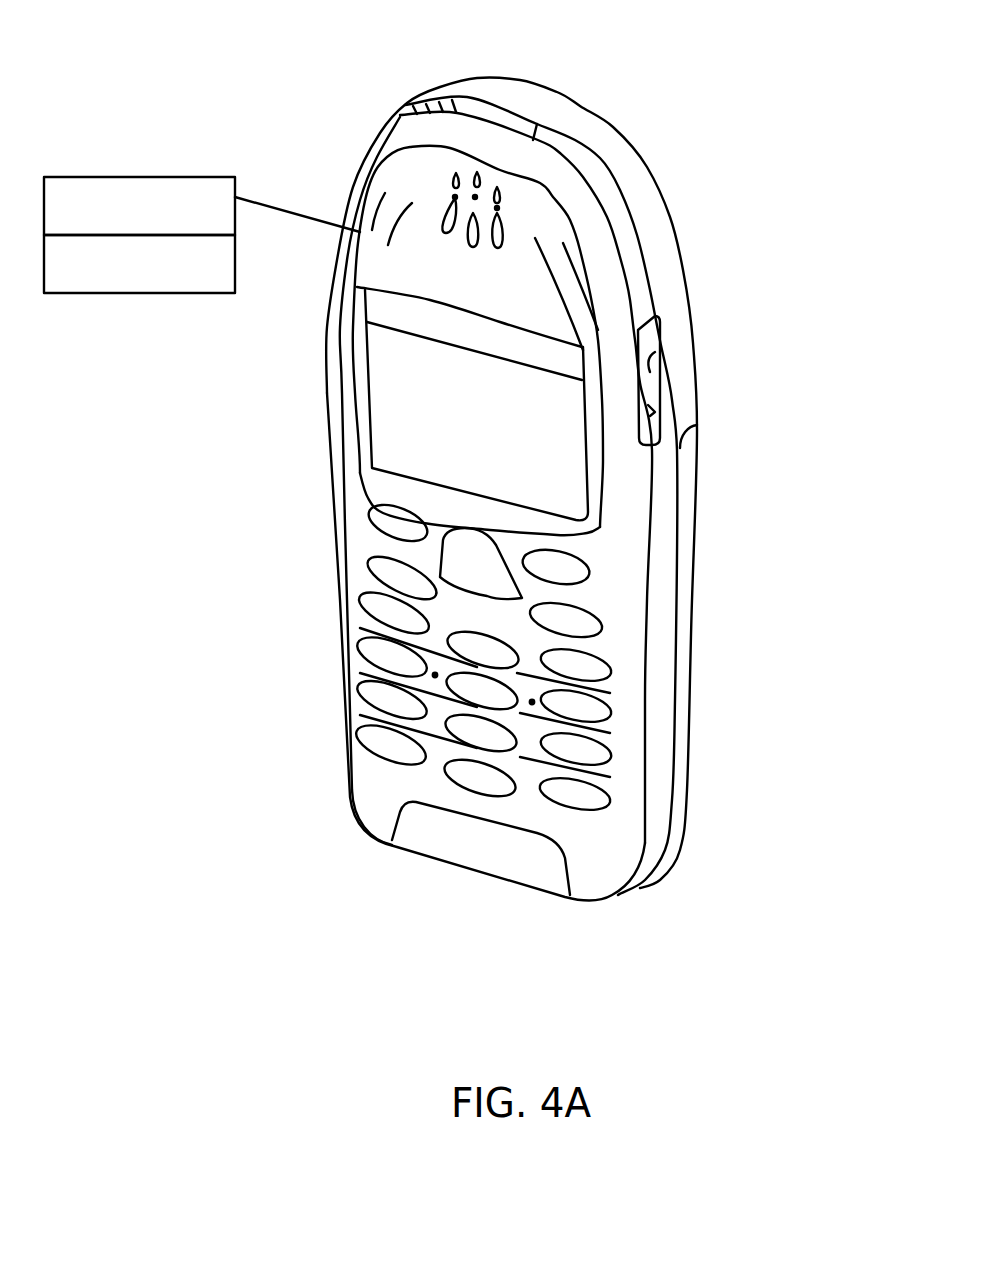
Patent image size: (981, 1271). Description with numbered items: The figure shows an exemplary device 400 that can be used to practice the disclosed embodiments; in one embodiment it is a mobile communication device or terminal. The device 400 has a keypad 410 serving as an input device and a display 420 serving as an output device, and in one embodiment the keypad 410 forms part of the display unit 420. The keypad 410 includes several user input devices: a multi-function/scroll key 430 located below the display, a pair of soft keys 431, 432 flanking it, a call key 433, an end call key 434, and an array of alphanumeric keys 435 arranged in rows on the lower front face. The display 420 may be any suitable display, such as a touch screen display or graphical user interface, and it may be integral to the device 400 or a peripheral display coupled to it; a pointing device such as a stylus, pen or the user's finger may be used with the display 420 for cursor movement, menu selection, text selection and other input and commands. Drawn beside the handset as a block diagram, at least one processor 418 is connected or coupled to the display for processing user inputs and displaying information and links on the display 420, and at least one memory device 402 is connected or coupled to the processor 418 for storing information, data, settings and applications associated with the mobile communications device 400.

The device 400 is at (638, 92).
The memory device 402 is at (100, 293).
The processor 418 is at (100, 177).
The keypad 410 is at (597, 815).
The display 420 is at (540, 455).
The multi-function/scroll key 430 is at (488, 570).
The soft key 431 is at (395, 522).
The soft key 432 is at (570, 570).
The call key 433 is at (395, 570).
The end call key 434 is at (567, 622).
The alphanumeric keys 435 is at (395, 746).